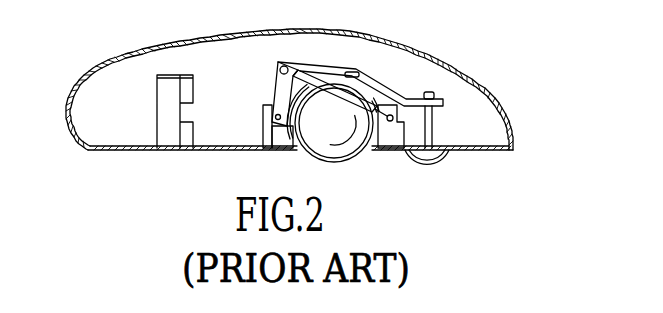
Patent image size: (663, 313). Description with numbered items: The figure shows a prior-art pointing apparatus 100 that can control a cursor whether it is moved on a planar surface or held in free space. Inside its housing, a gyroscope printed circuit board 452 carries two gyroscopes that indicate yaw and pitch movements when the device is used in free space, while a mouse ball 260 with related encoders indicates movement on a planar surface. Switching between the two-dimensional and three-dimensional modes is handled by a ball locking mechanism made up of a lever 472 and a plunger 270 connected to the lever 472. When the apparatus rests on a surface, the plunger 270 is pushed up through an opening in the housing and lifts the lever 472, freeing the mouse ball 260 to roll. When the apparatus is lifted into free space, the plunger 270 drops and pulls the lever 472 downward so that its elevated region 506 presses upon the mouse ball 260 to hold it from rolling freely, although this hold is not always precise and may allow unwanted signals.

The pointing apparatus 100 is at (327, 29).
The gyroscope printed circuit board 452 is at (185, 114).
The lever 472 is at (302, 60).
The elevated region 506 is at (358, 74).
The mouse ball 260 is at (351, 160).
The plunger 270 is at (443, 163).